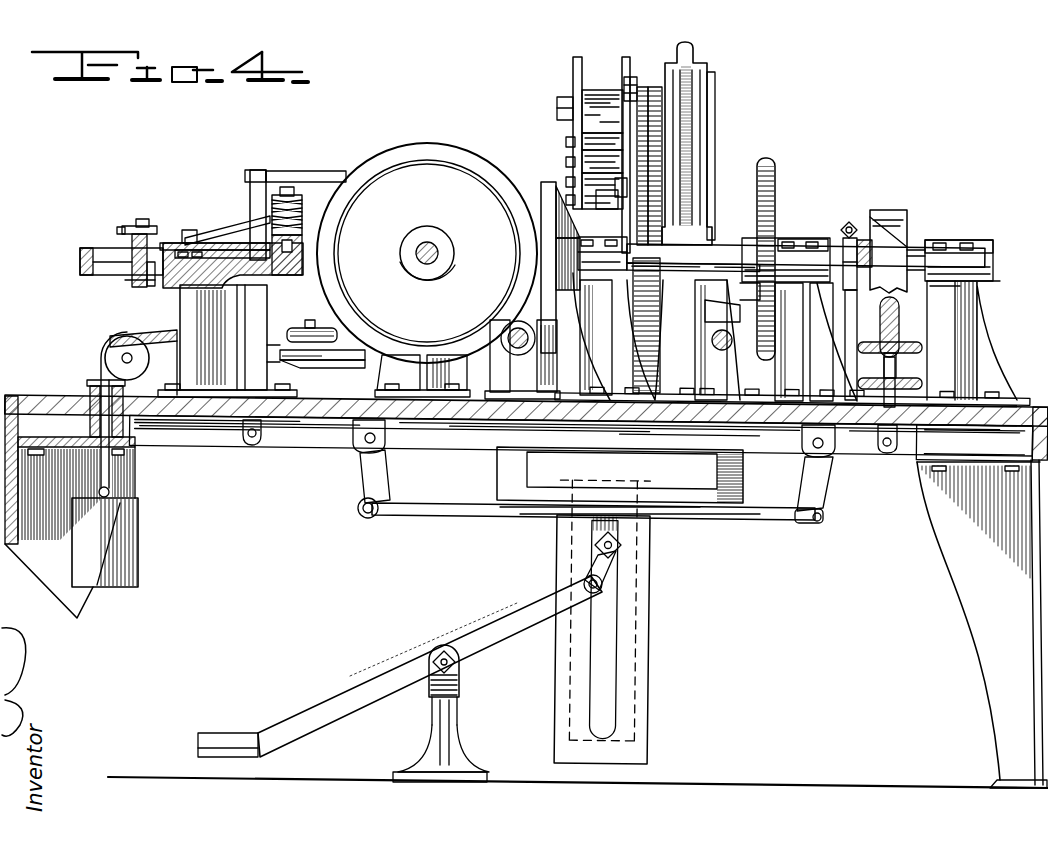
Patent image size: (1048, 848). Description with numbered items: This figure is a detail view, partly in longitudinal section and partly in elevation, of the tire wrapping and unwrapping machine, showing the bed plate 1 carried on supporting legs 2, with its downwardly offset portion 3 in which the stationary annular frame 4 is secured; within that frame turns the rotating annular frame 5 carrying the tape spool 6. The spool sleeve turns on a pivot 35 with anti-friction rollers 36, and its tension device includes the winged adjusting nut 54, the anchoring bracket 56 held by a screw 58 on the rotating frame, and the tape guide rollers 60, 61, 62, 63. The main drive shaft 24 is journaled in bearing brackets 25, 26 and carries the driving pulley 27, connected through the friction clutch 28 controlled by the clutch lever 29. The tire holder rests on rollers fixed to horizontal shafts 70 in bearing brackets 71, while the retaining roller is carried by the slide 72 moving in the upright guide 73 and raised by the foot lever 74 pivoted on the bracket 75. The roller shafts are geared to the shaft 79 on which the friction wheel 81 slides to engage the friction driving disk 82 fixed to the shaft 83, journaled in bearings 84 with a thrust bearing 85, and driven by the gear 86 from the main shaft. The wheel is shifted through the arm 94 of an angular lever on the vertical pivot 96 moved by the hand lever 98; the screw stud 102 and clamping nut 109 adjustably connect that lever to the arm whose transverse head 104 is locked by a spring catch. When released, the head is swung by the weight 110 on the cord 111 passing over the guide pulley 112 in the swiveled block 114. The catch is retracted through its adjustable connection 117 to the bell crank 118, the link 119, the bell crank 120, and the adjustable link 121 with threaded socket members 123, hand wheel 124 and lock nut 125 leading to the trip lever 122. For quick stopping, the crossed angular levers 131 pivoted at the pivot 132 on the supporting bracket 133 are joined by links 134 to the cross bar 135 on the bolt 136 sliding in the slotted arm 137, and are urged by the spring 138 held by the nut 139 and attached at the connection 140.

The bed plate 1 is at (212, 406).
The supporting legs 2 is at (526, 592).
The downwardly offset portion 3 is at (620, 475).
The stationary annular frame 4 is at (687, 83).
The rotating annular frame 5 is at (715, 107).
The tape spool 6 is at (593, 97).
The longitudinal shaft 24 is at (910, 253).
The bearing bracket 25 is at (720, 325).
The bearing bracket 26 is at (960, 240).
The driving pulley 27 is at (873, 230).
The friction clutch 28 is at (858, 237).
The clutch lever 29 is at (846, 222).
The pivot 35 is at (557, 107).
The anti-friction rollers 36 is at (128, 258).
The winged adjusting nut 54 is at (633, 80).
The bracket 56 is at (625, 186).
The screw 58 is at (630, 172).
The roller 60 is at (602, 200).
The roller 61 is at (588, 178).
The roller 62 is at (587, 140).
The roller 63 is at (590, 163).
The horizontal shafts 70 is at (508, 332).
The bearing brackets 71 is at (543, 358).
The slide 72 is at (615, 568).
The upright guide 73 is at (563, 544).
The foot lever 74 is at (470, 636).
The bracket 75 is at (460, 716).
The shaft 79 is at (427, 248).
The friction wheel 81 is at (418, 144).
The friction driving disk 82 is at (552, 205).
The longitudinally extending shaft 83 is at (707, 255).
The bearings 84 is at (803, 239).
The thrust bearing 85 is at (880, 212).
The gear 86 is at (776, 163).
The arm 94 is at (343, 350).
The vertical pivot 96 is at (250, 192).
The hand lever 98 is at (340, 175).
The screw stud 102 is at (318, 328).
The transverse head 104 is at (342, 362).
The clamping nut 109 is at (322, 331).
The weight 110 is at (139, 537).
The cord 111 is at (148, 338).
The guide pulley 112 is at (124, 352).
The block 114 is at (90, 393).
The adjustable connection 117 is at (246, 427).
The bell crank 118 is at (325, 438).
The link 119 is at (414, 516).
The bell crank 120 is at (810, 464).
The link 121 is at (897, 367).
The trip lever 122 is at (933, 283).
The threaded socket members 123 is at (897, 310).
The hand wheel 124 is at (923, 385).
The lock nut 125 is at (923, 348).
The angular levers 131 is at (175, 243).
The pivot 132 is at (286, 187).
The supporting bracket 133 is at (187, 302).
The links 134 is at (134, 226).
The cross bar 135 is at (122, 236).
The bolt 136 is at (133, 258).
The slotted arm 137 is at (80, 259).
The spring 138 is at (222, 228).
The nut 139 is at (290, 195).
The connection 140 is at (188, 230).